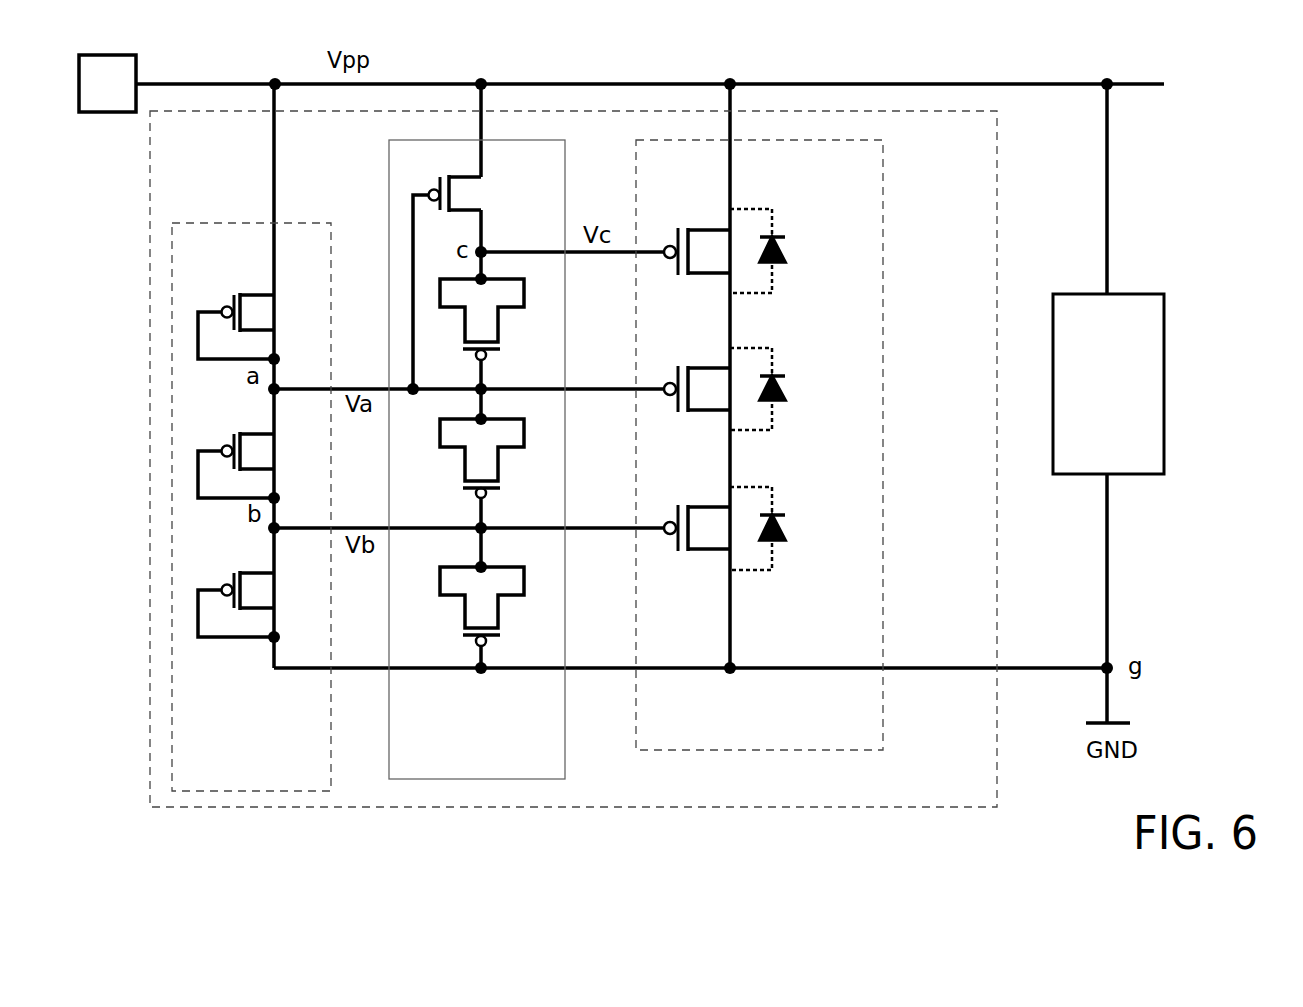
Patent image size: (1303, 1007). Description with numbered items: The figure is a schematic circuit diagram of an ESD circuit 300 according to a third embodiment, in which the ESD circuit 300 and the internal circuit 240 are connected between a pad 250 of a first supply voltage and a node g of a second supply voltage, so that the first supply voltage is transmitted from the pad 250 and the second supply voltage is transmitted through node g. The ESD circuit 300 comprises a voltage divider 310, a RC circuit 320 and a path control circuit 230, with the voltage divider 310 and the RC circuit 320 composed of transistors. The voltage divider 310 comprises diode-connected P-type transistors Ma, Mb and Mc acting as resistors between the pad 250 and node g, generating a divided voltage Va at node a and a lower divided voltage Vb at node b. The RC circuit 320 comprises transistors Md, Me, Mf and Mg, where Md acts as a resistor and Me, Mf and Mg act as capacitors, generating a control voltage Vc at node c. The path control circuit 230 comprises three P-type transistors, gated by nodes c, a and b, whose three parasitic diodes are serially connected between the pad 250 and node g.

The pad 250 is at (108, 108).
The internal circuit 240 is at (1130, 462).
The ESD circuit 300 is at (955, 792).
The voltage divider 310 is at (283, 775).
The RC circuit 320 is at (505, 763).
The path control circuit 230 is at (765, 747).